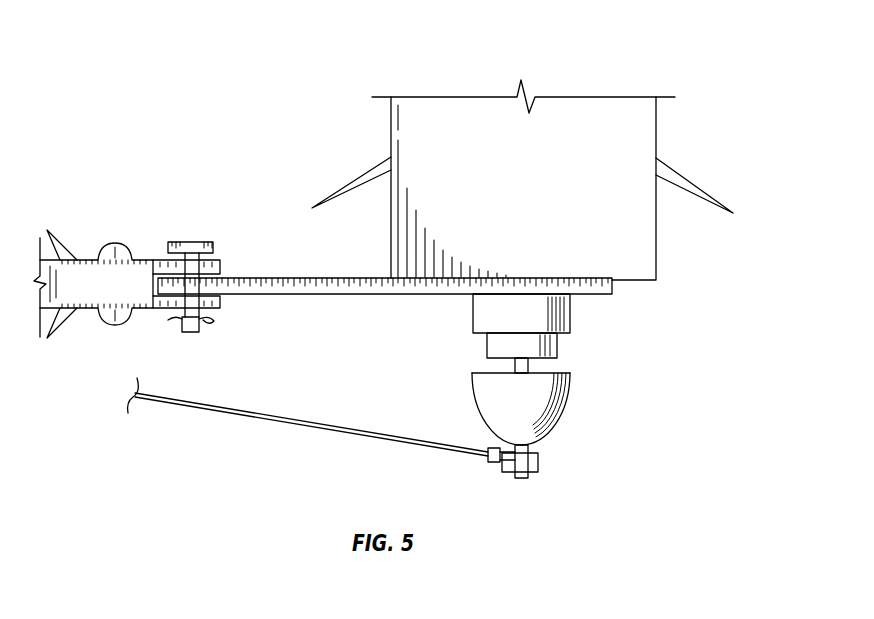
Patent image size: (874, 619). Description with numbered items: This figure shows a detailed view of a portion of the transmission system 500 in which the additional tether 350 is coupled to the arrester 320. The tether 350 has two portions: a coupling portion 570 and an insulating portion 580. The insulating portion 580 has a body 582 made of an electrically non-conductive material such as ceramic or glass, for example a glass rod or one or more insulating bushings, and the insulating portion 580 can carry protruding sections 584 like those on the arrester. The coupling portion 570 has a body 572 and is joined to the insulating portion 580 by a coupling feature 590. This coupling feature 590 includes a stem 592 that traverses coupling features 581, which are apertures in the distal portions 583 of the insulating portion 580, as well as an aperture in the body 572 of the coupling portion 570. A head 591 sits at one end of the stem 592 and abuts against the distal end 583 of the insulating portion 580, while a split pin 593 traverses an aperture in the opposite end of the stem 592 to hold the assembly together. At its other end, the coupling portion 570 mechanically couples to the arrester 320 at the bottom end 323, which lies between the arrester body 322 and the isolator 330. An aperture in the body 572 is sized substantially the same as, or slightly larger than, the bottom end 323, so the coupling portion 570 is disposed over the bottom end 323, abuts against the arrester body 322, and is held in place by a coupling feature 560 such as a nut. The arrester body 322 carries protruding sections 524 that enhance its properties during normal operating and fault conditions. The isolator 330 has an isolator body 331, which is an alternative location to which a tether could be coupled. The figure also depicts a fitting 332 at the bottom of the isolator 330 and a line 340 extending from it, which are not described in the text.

The transmission system 500 is at (120, 73).
The arrester 320 is at (766, 148).
The arrester body 322 is at (538, 191).
The protruding sections 524 is at (366, 171).
The insulating portion 580 is at (89, 334).
The body 582 is at (99, 295).
The protruding sections 584 is at (56, 232).
The tether 350 is at (224, 161).
The distal portions 583 is at (221, 265).
The coupling feature 590 is at (198, 229).
The head 591 is at (212, 243).
The stem 592 is at (186, 248).
The coupling features 581 is at (172, 252).
The split pin 593 is at (204, 326).
The coupling portion 570 is at (324, 305).
The body 572 is at (395, 294).
The coupling feature 560 is at (571, 316).
The isolator 330 is at (592, 428).
The bottom end 323 is at (557, 350).
The isolator body 331 is at (569, 402).
The nozzle fitting 332 is at (539, 466).
The supply tube 340 is at (323, 439).